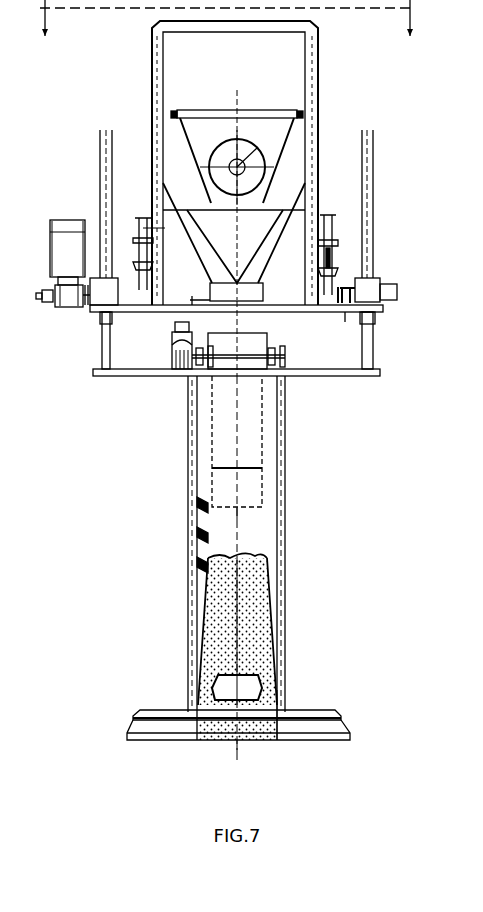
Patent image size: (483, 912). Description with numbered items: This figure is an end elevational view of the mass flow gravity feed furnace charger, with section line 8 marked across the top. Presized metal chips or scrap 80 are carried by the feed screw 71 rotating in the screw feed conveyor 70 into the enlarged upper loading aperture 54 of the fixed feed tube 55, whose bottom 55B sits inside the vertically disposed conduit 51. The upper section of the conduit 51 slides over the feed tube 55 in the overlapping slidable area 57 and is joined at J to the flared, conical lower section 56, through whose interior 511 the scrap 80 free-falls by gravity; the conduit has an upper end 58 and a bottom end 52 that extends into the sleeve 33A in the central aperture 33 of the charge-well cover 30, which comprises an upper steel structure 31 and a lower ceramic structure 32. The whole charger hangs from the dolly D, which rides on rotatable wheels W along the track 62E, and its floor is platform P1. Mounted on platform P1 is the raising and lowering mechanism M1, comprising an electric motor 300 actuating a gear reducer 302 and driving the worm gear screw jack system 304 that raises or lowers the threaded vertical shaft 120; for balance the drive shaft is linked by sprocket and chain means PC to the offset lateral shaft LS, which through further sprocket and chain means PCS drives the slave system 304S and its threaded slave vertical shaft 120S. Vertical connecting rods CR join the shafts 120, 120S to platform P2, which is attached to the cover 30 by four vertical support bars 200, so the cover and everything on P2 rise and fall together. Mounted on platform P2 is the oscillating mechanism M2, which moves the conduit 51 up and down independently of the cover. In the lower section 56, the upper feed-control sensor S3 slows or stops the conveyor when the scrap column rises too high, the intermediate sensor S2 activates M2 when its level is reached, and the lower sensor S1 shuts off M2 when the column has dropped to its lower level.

The section line 8- 8 is at (227, 33).
The dolly D is at (321, 68).
The screw feed conveyor 70 is at (262, 110).
The feed screw 71 is at (225, 148).
The upper loading aperture 54 is at (216, 250).
The platform P1 is at (385, 312).
The platform P2 is at (380, 376).
The vertical connecting rod CR is at (100, 357).
The threaded vertical shaft 120 is at (104, 130).
The threaded slave vertical shaft 120S is at (368, 130).
The sprocket and chain means PC is at (130, 285).
The slave system 304S is at (382, 288).
The rotatable wheel W is at (143, 215).
The track 62E is at (334, 255).
The offset lateral shaft LS is at (205, 300).
The electric motor 300 is at (75, 218).
The worm gear screw jack system 304 is at (88, 307).
The gear reducer 302 is at (63, 310).
The raising and lowering mechanism M1 is at (44, 293).
The oscillating mechanism M2 is at (170, 354).
The upper end of conduit 58 is at (262, 330).
The sprocket and chain means PCS is at (345, 315).
The feed tube 55 is at (275, 333).
The conduit 51 is at (206, 448).
The vertical support bar 200 is at (190, 632).
The overlapping slidable area 57 is at (255, 487).
The joint J is at (248, 467).
The bottom of feed tube 55B is at (245, 507).
The upper feed-control sensor S3 is at (197, 503).
The intermediate M2-activating sensor S2 is at (197, 533).
The lower sensor S1 is at (197, 563).
The lower section of conduit 56 is at (205, 592).
The metal chips or scrap 80 is at (252, 578).
The interior of conduit 511 is at (258, 640).
The charge-well cover 30 is at (344, 703).
The upper steel structure 31 is at (345, 712).
The lower ceramic structure 32 is at (350, 733).
The sleeve 33A is at (283, 690).
The bottom end of conduit 52 is at (250, 745).
The central aperture 33 is at (230, 752).